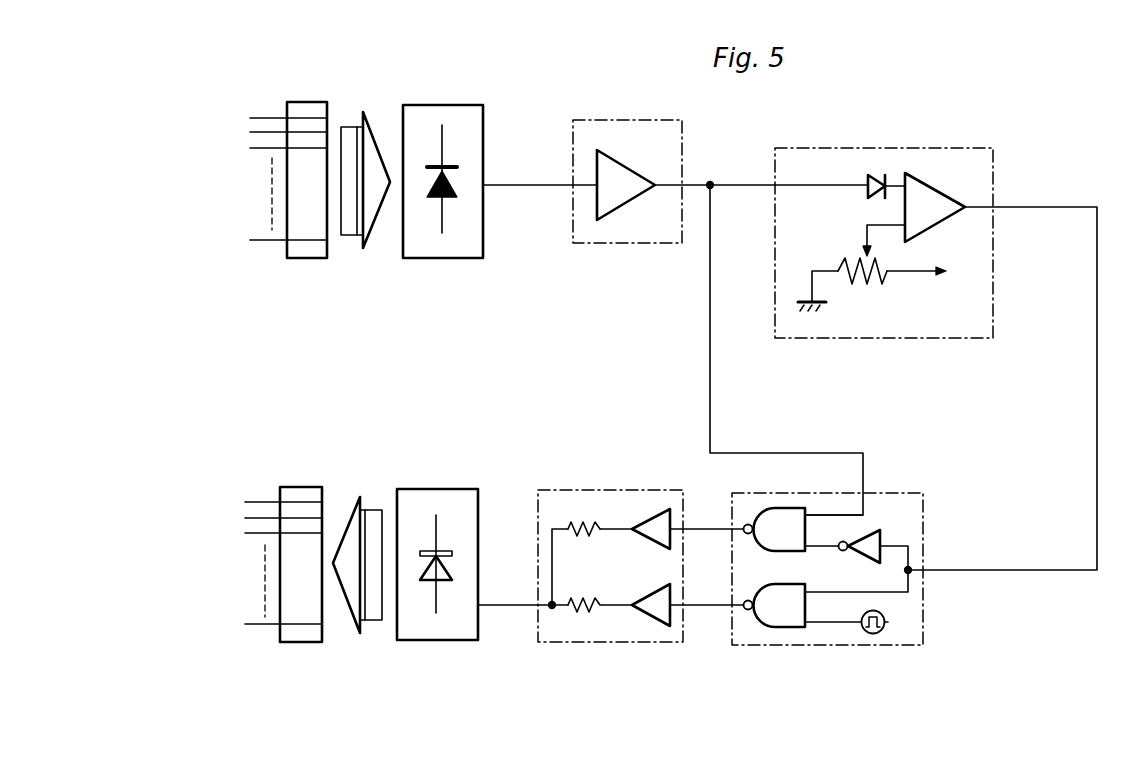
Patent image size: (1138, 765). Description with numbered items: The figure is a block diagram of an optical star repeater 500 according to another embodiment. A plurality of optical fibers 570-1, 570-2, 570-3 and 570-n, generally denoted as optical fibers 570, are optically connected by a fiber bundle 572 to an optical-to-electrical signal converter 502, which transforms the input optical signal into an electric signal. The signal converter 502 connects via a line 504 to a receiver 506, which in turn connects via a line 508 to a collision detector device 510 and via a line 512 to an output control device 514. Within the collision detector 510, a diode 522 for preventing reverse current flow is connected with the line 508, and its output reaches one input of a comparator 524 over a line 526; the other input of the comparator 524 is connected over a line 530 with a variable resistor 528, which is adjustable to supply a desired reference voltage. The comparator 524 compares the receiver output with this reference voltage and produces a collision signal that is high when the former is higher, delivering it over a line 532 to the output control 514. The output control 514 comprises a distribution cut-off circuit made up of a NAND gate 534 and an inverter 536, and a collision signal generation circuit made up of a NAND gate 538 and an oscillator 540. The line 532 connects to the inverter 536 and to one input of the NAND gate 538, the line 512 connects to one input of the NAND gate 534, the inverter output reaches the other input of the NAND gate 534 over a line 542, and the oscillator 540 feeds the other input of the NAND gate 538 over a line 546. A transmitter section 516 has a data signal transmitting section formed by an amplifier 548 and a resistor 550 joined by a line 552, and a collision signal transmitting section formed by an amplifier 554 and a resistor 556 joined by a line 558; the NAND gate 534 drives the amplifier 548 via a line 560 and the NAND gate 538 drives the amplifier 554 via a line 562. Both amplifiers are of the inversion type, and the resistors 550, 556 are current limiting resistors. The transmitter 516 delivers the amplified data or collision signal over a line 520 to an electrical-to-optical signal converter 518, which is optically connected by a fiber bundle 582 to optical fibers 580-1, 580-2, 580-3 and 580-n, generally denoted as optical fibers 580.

The optical star repeater 500 is at (547, 98).
The optical-to-electrical signal converter 502 is at (447, 105).
The line 504 is at (525, 183).
The receiver 506 is at (612, 118).
The line 508 is at (744, 183).
The collision detector device 510 is at (930, 340).
The line 512 is at (712, 390).
The output control device 514 is at (927, 502).
The transmitter section 516 is at (607, 488).
The electrical-to-optical signal converter 518 is at (430, 489).
The line 520 is at (507, 604).
The diode 522 is at (870, 172).
The comparator 524 is at (960, 182).
The line 526 is at (893, 185).
The variable resistor 528 is at (867, 288).
The line 530 is at (870, 225).
The line 532 is at (1097, 385).
The NAND gate 534 is at (783, 508).
The inverter 536 is at (875, 528).
The NAND gate 538 is at (775, 647).
The oscillator 540 is at (888, 622).
The line 542 is at (825, 549).
The line 546 is at (835, 624).
The amplifier 548 is at (657, 509).
The resistor 550 is at (578, 520).
The line 552 is at (615, 531).
The amplifier 554 is at (655, 625).
The resistor 556 is at (572, 608).
The line 558 is at (615, 608).
The line 560 is at (707, 528).
The line 562 is at (705, 607).
The optical fibers 570 is at (294, 90).
The optical fiber 570-1 is at (262, 117).
The optical fiber 570-2 is at (256, 133).
The optical fiber 570-3 is at (256, 149).
The optical fiber 570-n is at (262, 240).
The fiber bundle 572 is at (320, 103).
The optical fibers 580 is at (285, 464).
The optical fiber 580-1 is at (258, 501).
The optical fiber 580-2 is at (252, 518).
The optical fiber 580-3 is at (252, 533).
The optical fiber 580-n is at (258, 624).
The fiber bundle 582 is at (313, 487).